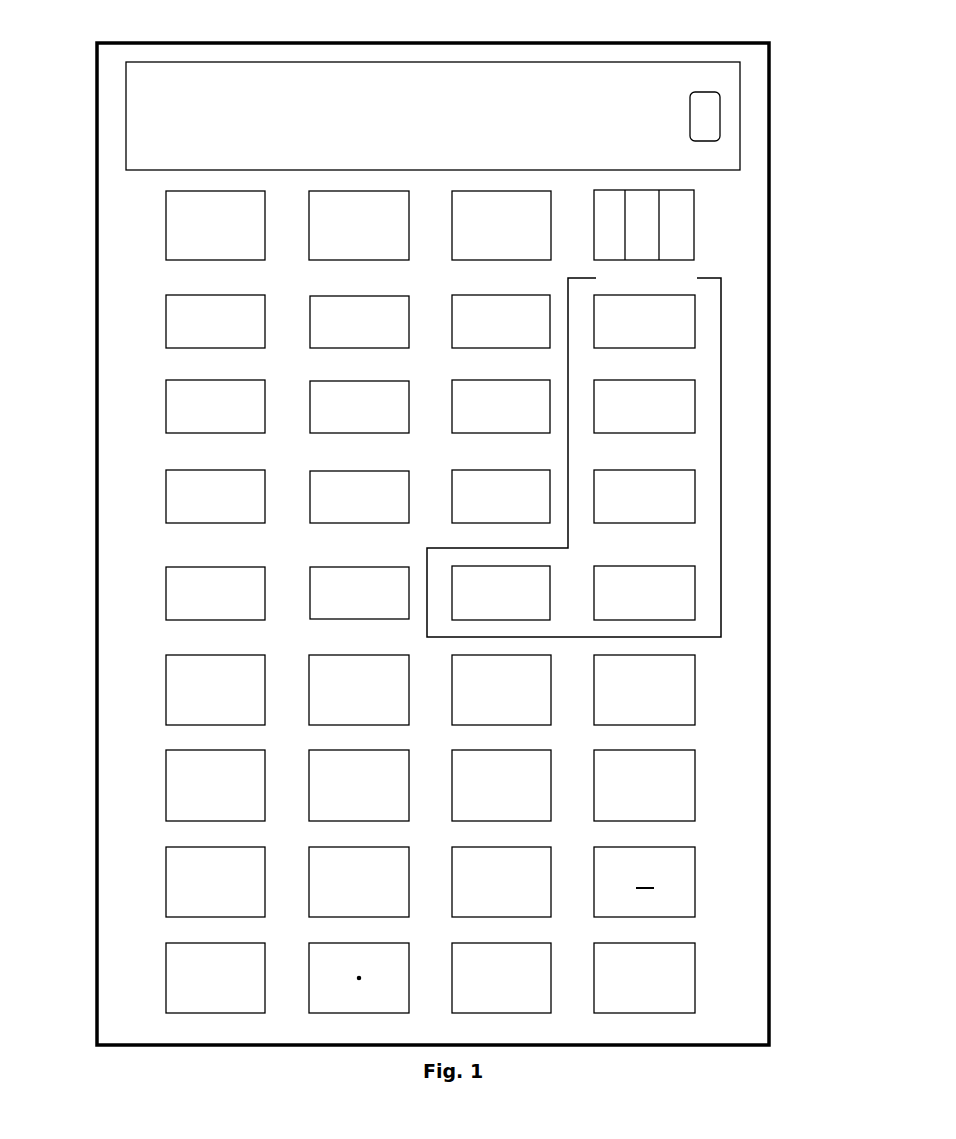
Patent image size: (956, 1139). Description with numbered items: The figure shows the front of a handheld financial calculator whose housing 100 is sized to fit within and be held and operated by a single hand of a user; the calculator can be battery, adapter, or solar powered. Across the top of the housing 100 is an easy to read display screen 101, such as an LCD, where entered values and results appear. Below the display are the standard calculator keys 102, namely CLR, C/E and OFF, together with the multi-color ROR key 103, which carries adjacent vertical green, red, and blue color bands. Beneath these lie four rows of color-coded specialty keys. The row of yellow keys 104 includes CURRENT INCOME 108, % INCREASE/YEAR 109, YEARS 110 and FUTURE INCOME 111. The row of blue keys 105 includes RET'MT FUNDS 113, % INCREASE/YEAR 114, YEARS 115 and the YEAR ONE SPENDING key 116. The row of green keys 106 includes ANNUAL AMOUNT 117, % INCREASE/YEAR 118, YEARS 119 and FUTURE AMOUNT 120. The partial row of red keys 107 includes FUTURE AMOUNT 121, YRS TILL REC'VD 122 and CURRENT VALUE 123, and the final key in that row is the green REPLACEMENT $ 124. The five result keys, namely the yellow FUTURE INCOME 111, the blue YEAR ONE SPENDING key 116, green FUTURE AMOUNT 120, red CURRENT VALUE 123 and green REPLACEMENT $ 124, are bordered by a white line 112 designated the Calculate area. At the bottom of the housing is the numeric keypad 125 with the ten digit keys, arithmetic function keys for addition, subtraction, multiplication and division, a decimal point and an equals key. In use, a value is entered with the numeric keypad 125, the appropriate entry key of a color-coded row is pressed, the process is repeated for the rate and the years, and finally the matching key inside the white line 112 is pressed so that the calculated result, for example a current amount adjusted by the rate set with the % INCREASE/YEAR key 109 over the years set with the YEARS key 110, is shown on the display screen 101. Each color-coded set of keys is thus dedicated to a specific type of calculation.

The housing 100 is at (123, 33).
The display screen 101 is at (752, 72).
The standard calculator keys 102 is at (115, 198).
The ROR key 103 is at (703, 228).
The row of yellow keys 104 is at (291, 307).
The row of blue keys 105 is at (291, 393).
The row of green keys 106 is at (291, 482).
The partial row of red keys 107 is at (291, 579).
The CURRENT INCOME key 108 is at (165, 296).
The % INCREASE/YEAR key 109 is at (322, 297).
The YEARS key 110 is at (468, 297).
The FUTURE INCOME key 111 is at (703, 313).
The white line 112 is at (627, 451).
The RET'MT FUNDS key 113 is at (165, 383).
The % INCREASE/YEAR key 114 is at (322, 383).
The YEARS key 115 is at (462, 383).
The YEAR 1 SPENDING key 116 is at (695, 400).
The ANNUAL AMOUNT key 117 is at (165, 470).
The % INCREASE/YEAR key 118 is at (322, 470).
The YEARS key 119 is at (462, 470).
The FUTURE AMOUNT key 120 is at (703, 477).
The FUTURE AMOUNT key 121 is at (165, 566).
The YRS TILL REC'VD key 122 is at (330, 567).
The CURRENT VALUE key 123 is at (443, 568).
The REPLACEMENT $ key 124 is at (703, 580).
The numeric keypad 125 is at (730, 666).